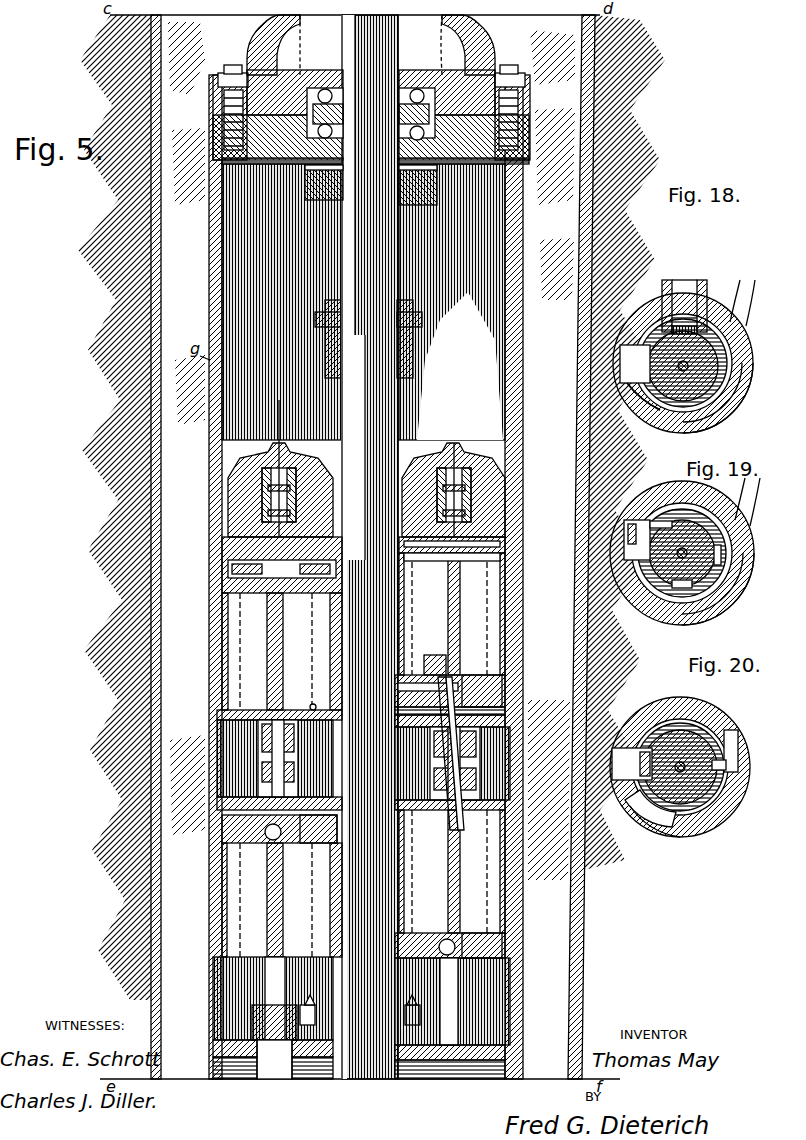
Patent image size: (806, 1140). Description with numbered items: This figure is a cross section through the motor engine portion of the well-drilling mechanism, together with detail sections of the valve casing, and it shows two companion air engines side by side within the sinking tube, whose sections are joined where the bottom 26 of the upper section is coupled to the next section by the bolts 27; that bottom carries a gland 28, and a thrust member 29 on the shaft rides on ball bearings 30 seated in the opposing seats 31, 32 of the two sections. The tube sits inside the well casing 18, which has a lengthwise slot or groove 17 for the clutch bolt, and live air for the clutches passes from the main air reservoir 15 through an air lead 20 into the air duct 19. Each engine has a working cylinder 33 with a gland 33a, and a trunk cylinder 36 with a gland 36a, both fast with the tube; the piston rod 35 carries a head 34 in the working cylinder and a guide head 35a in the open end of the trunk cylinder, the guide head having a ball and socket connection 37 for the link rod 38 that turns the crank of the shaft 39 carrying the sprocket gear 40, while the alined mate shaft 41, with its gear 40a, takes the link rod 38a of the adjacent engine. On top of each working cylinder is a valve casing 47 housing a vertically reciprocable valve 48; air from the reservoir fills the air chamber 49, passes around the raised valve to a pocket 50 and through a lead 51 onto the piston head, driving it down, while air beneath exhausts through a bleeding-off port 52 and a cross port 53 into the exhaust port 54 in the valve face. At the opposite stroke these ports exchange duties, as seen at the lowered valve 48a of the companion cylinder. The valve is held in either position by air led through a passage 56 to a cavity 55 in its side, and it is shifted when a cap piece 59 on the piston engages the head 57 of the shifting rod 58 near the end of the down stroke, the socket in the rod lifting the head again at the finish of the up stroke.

In FIG. 18, the main air reservoir 15 is at (748, 302).
In FIG. 5, the slot or groove 17 is at (279, 443).
In FIG. 5, the well casing 18 is at (262, 485).
In FIG. 5, the air duct 19 is at (262, 505).
In FIG. 5, the air lead 20 is at (265, 524).
In FIG. 5, the bottom 26 is at (221, 95).
In FIG. 5, the bolts 27 is at (526, 96).
In FIG. 5, the gland 28 is at (432, 183).
In FIG. 5, the thrust member 29 is at (306, 180).
In FIG. 5, the ball bearings 30 is at (326, 89).
In FIG. 5, the seat 31 is at (371, 45).
In FIG. 5, the seat 32 is at (426, 136).
In FIG. 5, the working cylinder 33 is at (222, 640).
In FIG. 5, the gland 33a is at (222, 716).
In FIG. 5, the head 34 is at (228, 598).
In FIG. 5, the rod 35 is at (268, 680).
In FIG. 5, the guide head 35a is at (283, 668).
In FIG. 5, the trunk cylinder 36 is at (330, 901).
In FIG. 5, the gland 36a is at (440, 782).
In FIG. 5, the ball and socket connection 37 is at (268, 843).
In FIG. 5, the link rod 38 is at (300, 936).
In FIG. 5, the link rod 38a is at (444, 1001).
In FIG. 5, the shaft 39 is at (312, 1100).
In FIG. 5, the sprocket gear 40 is at (345, 1045).
In FIG. 5, the gear 40a is at (412, 1050).
In FIG. 5, the mate shaft 41 is at (420, 1082).
In FIG. 18, the valve casing 47 is at (660, 420).
In FIG. 19, the valve casing 47 is at (682, 553).
In FIG. 20, the valve casing 47 is at (668, 706).
In FIG. 18, the valve 48 is at (645, 402).
In FIG. 19, the valve 48 is at (650, 598).
In FIG. 20, the valve 48 is at (712, 744).
In FIG. 5, the valve 48a is at (462, 600).
In FIG. 18, the air chamber 49 is at (725, 415).
In FIG. 19, the air chamber 49 is at (732, 592).
In FIG. 20, the air chamber 49 is at (650, 832).
In FIG. 19, the pocket 50 is at (647, 585).
In FIG. 20, the pocket 50 is at (640, 800).
In FIG. 19, the lead 51 is at (640, 522).
In FIG. 20, the lead 51 is at (640, 730).
In FIG. 5, the bleeding-off port 52 is at (317, 708).
In FIG. 20, the cross port 53 is at (728, 790).
In FIG. 18, the exhaust port 54 is at (704, 322).
In FIG. 19, the pocket or cavity 55 is at (716, 608).
In FIG. 19, the passage 56 is at (668, 612).
In FIG. 5, the head 57 is at (459, 736).
In FIG. 5, the shifting rod 58 is at (458, 655).
In FIG. 5, the cap piece 59 is at (440, 678).
In FIG. 18, the cap piece 59 is at (665, 290).